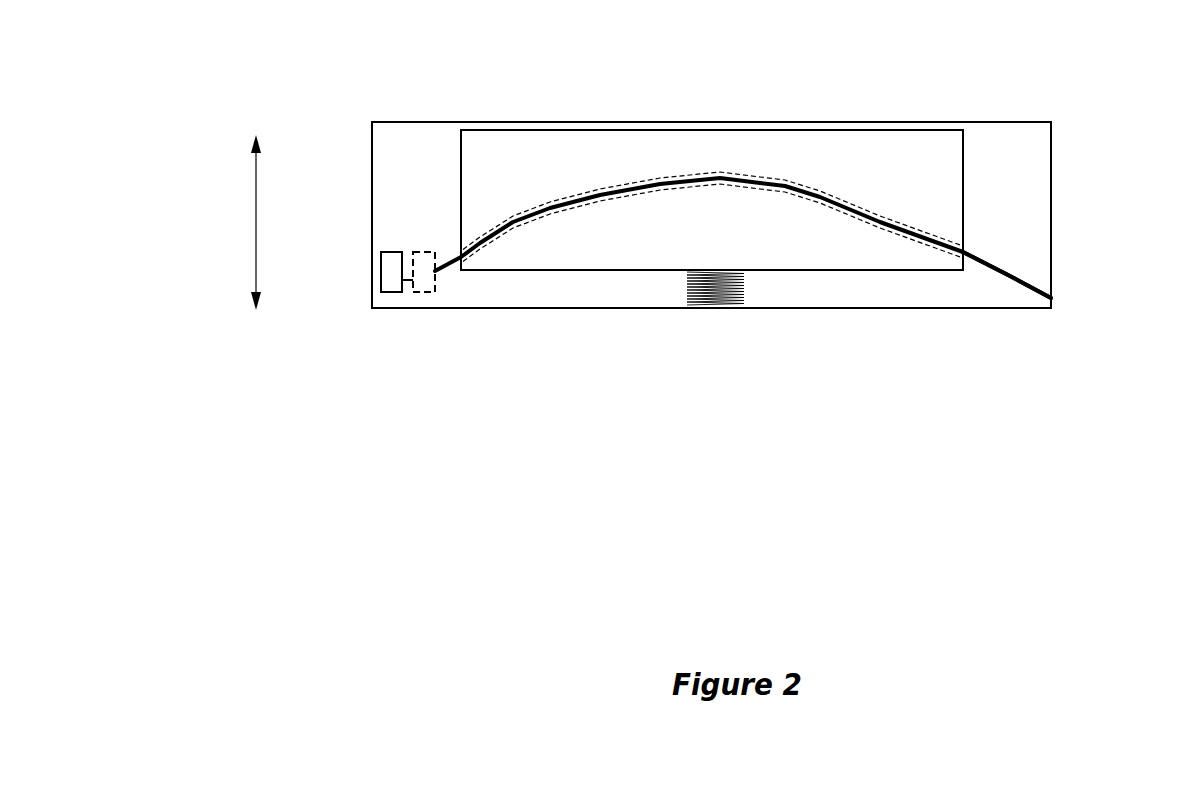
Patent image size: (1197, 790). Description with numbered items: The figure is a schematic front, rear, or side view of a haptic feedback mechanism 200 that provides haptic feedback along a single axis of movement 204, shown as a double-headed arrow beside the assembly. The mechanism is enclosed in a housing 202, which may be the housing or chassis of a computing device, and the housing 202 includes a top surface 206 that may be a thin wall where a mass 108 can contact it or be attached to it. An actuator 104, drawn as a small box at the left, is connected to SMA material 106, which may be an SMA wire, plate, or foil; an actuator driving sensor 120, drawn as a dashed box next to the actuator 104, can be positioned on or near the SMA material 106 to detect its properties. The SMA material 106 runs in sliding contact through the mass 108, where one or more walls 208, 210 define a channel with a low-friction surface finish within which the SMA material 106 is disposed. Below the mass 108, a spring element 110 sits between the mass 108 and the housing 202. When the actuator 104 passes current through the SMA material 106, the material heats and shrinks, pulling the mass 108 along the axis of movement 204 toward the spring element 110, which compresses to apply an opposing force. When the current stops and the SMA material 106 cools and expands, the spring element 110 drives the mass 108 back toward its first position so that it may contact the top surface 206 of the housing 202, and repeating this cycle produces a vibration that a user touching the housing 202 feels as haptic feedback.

The haptic feedback mechanism 200 is at (321, 62).
The housing 202 is at (1053, 150).
The axis of movement 204 is at (256, 195).
The top surface 206 is at (903, 124).
The wall 208 is at (785, 185).
The wall 210 is at (847, 213).
The actuator 104 is at (392, 253).
The actuator driving sensor 120 is at (423, 253).
The mass 108 is at (533, 131).
The SMA material 106 is at (1010, 275).
The spring element 110 is at (710, 305).